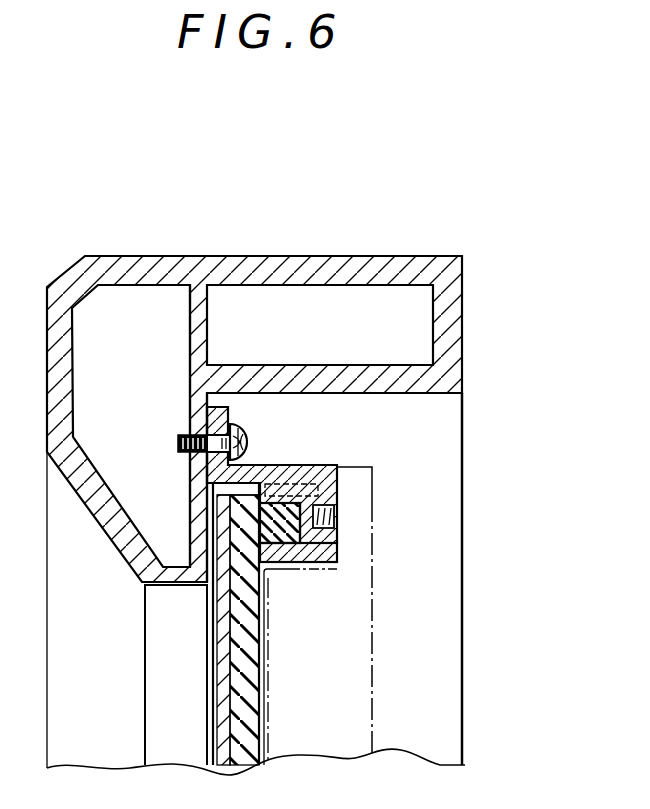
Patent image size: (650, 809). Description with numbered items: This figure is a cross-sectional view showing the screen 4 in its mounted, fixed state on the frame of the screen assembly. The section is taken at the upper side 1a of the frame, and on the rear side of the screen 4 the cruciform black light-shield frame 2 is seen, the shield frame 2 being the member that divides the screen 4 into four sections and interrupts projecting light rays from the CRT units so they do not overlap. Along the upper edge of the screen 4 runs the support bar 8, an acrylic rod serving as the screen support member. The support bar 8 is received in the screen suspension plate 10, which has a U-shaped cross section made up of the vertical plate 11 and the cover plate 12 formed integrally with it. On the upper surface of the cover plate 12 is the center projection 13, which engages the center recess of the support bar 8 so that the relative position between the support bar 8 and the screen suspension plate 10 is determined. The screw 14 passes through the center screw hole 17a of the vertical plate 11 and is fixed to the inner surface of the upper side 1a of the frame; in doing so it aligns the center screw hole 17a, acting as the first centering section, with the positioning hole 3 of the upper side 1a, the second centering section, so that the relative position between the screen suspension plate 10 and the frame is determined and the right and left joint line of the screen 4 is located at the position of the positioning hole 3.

The upper side of the frame 1a is at (405, 257).
The shield frame 2 is at (380, 676).
The positioning hole 3 is at (178, 441).
The screen 4 is at (266, 707).
The support bar 8 is at (288, 545).
The screen suspension plate 10 is at (326, 506).
The vertical plate 11 is at (189, 464).
The cover plate 12 is at (340, 490).
The center projection 13 is at (305, 546).
The screw 14 is at (250, 440).
The center screw hole 17a is at (237, 431).